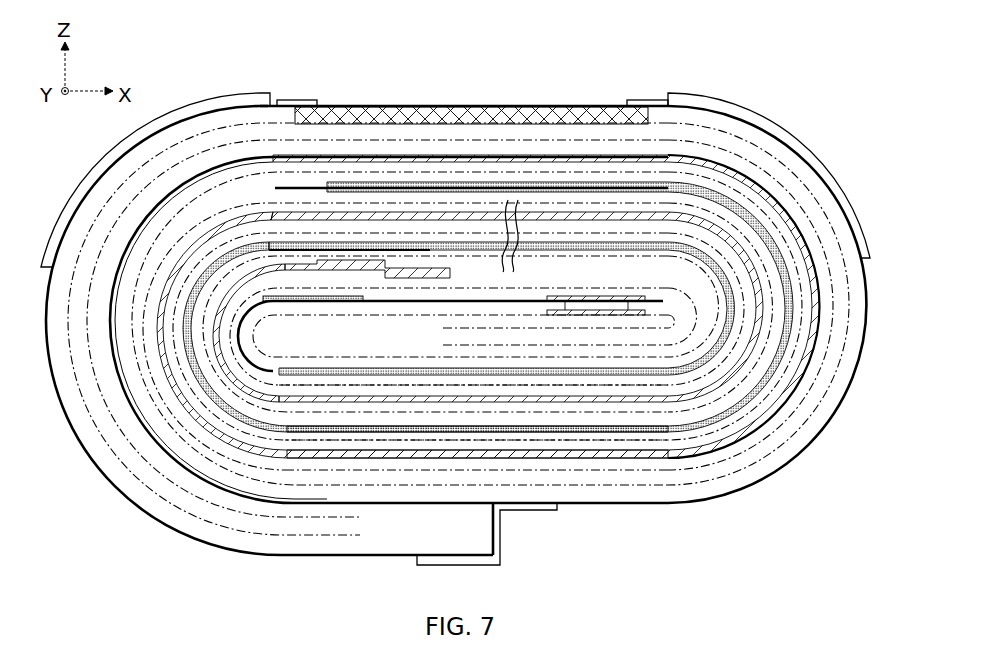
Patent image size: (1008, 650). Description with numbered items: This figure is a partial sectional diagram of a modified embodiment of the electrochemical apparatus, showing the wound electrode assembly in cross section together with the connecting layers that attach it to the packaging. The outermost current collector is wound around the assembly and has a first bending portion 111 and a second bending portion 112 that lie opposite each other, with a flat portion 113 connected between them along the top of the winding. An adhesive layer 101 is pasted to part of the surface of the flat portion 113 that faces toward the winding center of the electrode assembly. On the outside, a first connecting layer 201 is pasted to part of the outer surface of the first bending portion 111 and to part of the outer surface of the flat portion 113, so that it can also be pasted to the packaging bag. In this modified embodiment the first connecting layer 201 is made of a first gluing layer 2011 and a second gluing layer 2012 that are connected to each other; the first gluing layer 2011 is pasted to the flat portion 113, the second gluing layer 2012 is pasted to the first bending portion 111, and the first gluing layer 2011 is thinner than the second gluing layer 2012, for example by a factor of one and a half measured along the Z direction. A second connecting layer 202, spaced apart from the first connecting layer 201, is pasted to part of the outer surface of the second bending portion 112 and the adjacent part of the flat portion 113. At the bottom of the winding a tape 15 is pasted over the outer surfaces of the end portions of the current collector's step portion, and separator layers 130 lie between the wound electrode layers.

The tape 15 is at (537, 511).
The adhesive layer 101 is at (550, 106).
The first bending portion 111 is at (103, 482).
The second bending portion 112 is at (857, 392).
The flat portion 113 is at (442, 106).
The separator 130 is at (757, 448).
The first connecting layer 201 is at (245, 82).
The first gluing layer 2011 is at (294, 100).
The second gluing layer 2012 is at (197, 112).
The second connecting layer 202 is at (781, 98).